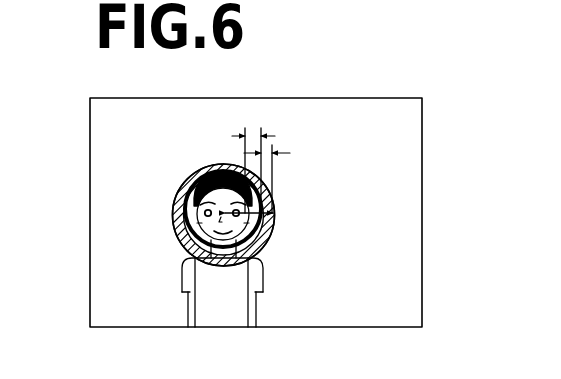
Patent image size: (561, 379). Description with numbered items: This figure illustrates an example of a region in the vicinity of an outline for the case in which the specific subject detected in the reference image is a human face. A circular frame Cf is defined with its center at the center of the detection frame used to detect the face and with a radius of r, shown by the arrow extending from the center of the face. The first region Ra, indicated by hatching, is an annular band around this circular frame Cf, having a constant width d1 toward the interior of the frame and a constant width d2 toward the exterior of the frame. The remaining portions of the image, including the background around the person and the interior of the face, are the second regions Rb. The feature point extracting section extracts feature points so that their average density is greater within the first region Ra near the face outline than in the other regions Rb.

The circular frame Cf is at (197, 175).
The first region in the vicinity of the outline Ra is at (178, 200).
The second regions Rb is at (347, 107).
The constant width toward the interior d1 is at (253, 136).
The constant width toward the exterior d2 is at (266, 153).
The radius of the circular frame r is at (262, 230).